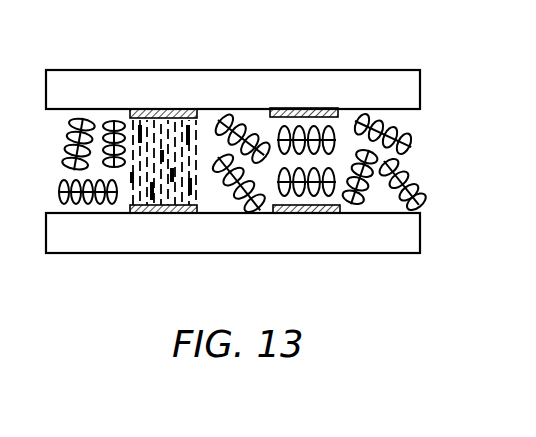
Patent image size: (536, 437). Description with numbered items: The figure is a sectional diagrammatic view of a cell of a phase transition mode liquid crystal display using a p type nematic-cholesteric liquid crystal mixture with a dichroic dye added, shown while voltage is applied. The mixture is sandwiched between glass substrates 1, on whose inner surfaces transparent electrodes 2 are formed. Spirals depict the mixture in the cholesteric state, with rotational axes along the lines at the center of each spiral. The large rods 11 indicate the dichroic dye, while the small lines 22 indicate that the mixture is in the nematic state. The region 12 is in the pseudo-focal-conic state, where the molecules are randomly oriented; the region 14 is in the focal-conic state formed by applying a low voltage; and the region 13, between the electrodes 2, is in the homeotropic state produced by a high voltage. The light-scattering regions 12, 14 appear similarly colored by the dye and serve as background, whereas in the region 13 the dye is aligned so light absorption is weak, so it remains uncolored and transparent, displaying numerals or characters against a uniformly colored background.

The glass substrate 1 is at (375, 92).
The transparent electrode 2 is at (318, 110).
The homeotropic state region 13 is at (165, 143).
The small lines 22 is at (198, 127).
The focal-conic state region 14 is at (302, 158).
The large rods 11 is at (120, 180).
The pseudo-focal-conic state region 12 is at (97, 205).